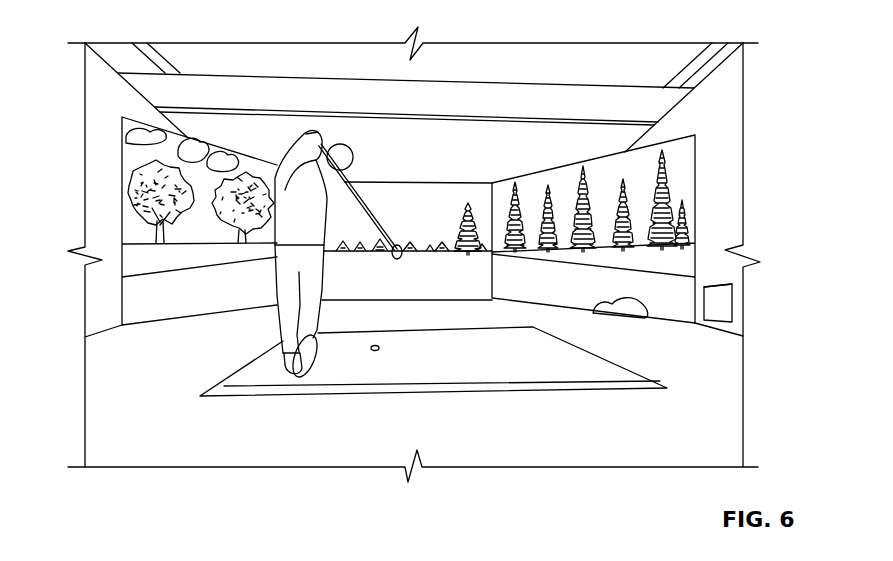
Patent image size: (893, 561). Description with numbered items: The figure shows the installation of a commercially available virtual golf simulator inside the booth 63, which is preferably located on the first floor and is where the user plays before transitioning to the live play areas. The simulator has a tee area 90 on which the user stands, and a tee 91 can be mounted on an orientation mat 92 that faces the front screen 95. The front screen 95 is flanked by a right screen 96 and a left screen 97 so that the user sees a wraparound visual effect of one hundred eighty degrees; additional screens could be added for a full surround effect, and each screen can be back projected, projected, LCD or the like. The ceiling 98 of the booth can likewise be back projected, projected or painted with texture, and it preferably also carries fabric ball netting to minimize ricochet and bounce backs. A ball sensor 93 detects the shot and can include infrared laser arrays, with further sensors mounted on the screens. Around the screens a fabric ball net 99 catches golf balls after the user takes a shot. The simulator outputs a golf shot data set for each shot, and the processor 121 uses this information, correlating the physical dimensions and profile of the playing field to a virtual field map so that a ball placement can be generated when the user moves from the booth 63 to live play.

The booth 63 is at (100, 413).
The tee area 90 is at (515, 373).
The tee 91 is at (379, 349).
The orientation mat 92 is at (587, 360).
The ball sensor 93 is at (722, 310).
The processor 121 is at (725, 293).
The front screen 95 is at (432, 193).
The right screen 96 is at (677, 152).
The left screen 97 is at (130, 169).
The ceiling 98 is at (605, 60).
The fabric ball net 99 is at (486, 94).